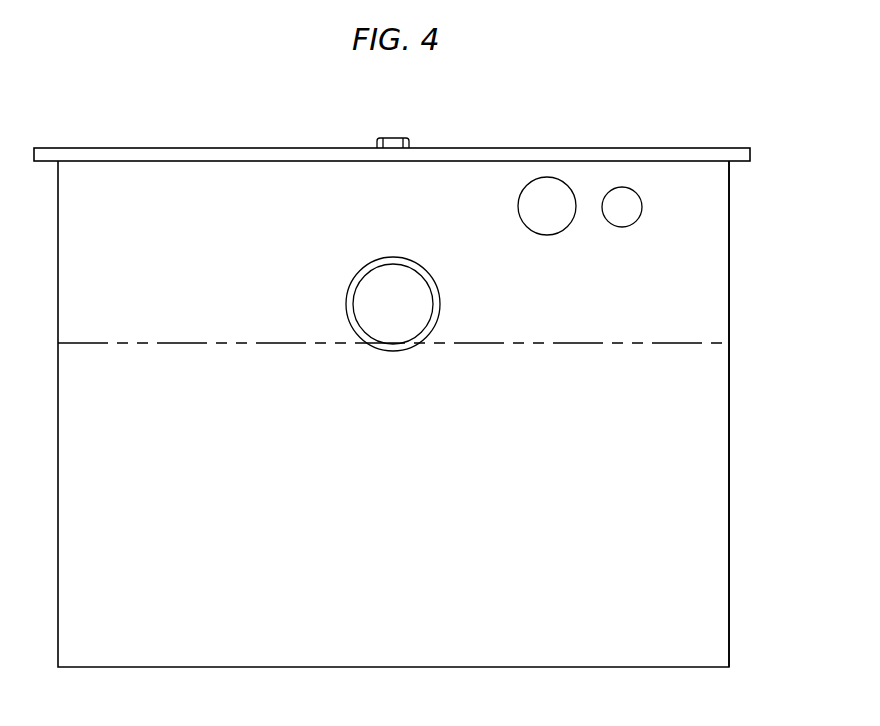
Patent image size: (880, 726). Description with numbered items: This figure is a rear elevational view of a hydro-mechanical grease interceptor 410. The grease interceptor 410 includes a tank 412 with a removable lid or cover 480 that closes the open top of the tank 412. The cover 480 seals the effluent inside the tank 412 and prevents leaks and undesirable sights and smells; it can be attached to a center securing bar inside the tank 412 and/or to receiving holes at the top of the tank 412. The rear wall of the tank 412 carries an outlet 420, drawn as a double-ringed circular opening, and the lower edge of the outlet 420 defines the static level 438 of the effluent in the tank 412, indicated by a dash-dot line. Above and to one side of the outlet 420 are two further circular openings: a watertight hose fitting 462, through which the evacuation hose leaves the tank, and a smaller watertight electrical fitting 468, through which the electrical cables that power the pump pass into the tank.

The grease interceptor 410 is at (192, 85).
The tank 412 is at (731, 229).
The removable lid or cover 480 is at (217, 161).
The outlet 420 is at (393, 303).
The hose fitting 462 is at (563, 180).
The electrical fitting 468 is at (608, 191).
The static level 438 is at (731, 343).